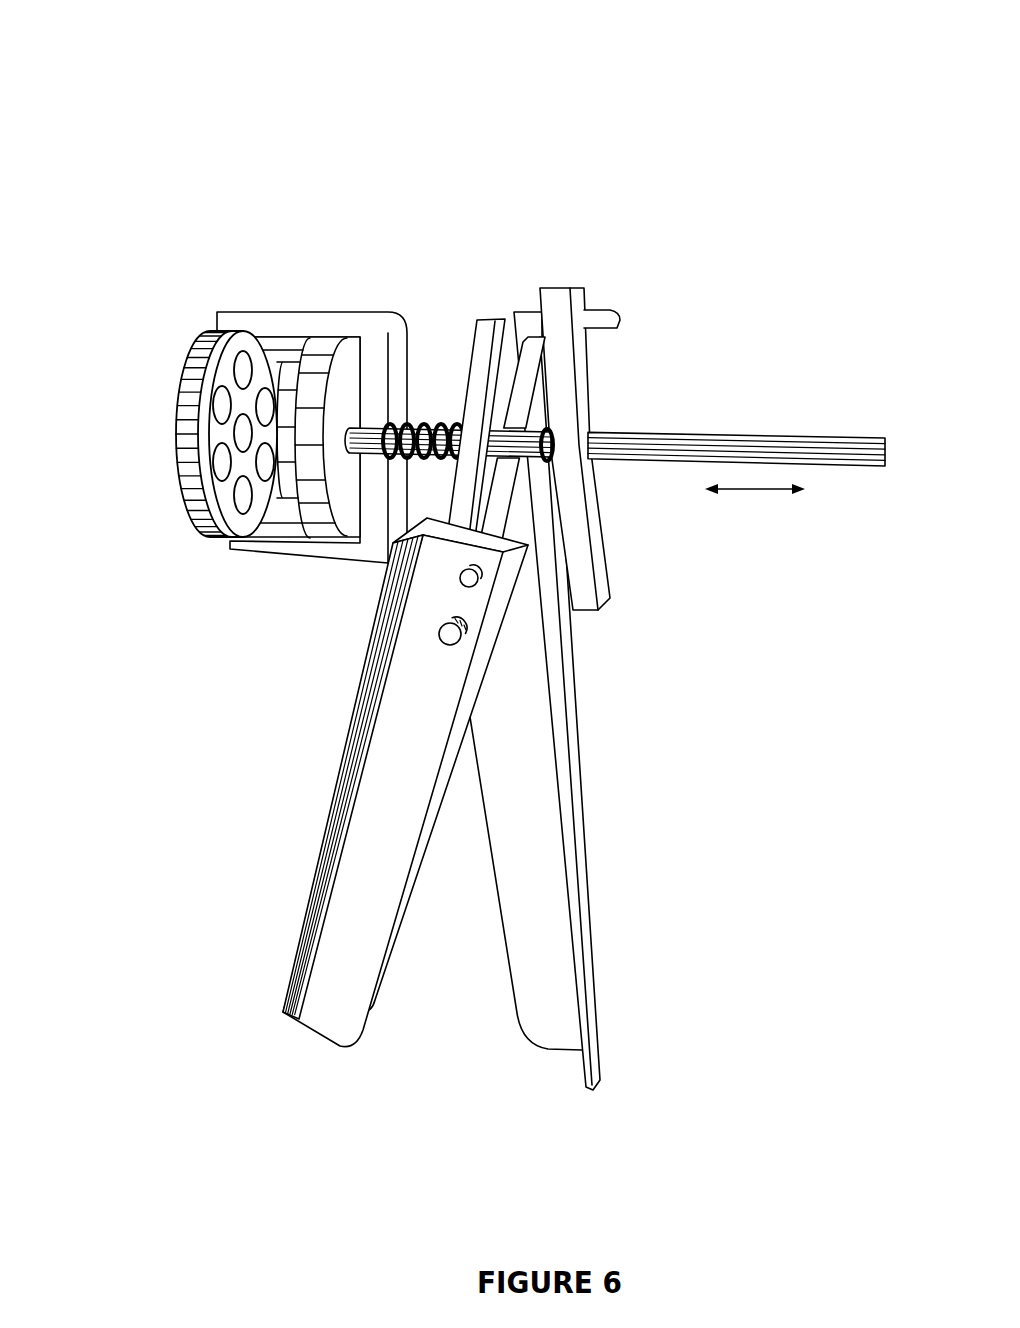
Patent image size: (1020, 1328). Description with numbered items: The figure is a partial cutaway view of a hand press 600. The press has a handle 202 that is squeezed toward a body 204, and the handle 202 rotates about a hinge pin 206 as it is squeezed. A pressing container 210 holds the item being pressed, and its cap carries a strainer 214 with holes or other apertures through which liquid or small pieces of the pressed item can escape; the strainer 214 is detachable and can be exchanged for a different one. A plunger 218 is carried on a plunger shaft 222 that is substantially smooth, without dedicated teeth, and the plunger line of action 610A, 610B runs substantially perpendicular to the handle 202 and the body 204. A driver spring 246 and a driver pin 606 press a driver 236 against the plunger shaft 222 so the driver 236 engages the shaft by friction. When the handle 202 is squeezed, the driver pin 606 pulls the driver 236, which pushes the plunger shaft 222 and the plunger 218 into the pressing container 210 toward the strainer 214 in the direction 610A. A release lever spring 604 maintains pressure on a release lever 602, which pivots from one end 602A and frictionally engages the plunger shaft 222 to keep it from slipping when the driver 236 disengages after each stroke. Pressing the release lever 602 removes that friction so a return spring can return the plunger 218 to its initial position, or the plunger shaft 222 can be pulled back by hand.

The hand press 600 is at (481, 45).
The handle 202 is at (367, 800).
The body 204 is at (592, 1005).
The hinge pin 206 is at (447, 635).
The pressing container 210 is at (287, 313).
The strainer 214 is at (184, 372).
The plunger 218 is at (360, 318).
The plunger shaft 222 is at (753, 437).
The driver 236 is at (488, 318).
The driver spring 246 is at (431, 422).
The release lever 602 is at (613, 560).
The end of release lever 602A is at (563, 288).
The release lever spring 604 is at (549, 433).
The driver pin 606 is at (473, 580).
The line of action direction 610A is at (720, 488).
The line of action direction 610B is at (828, 488).